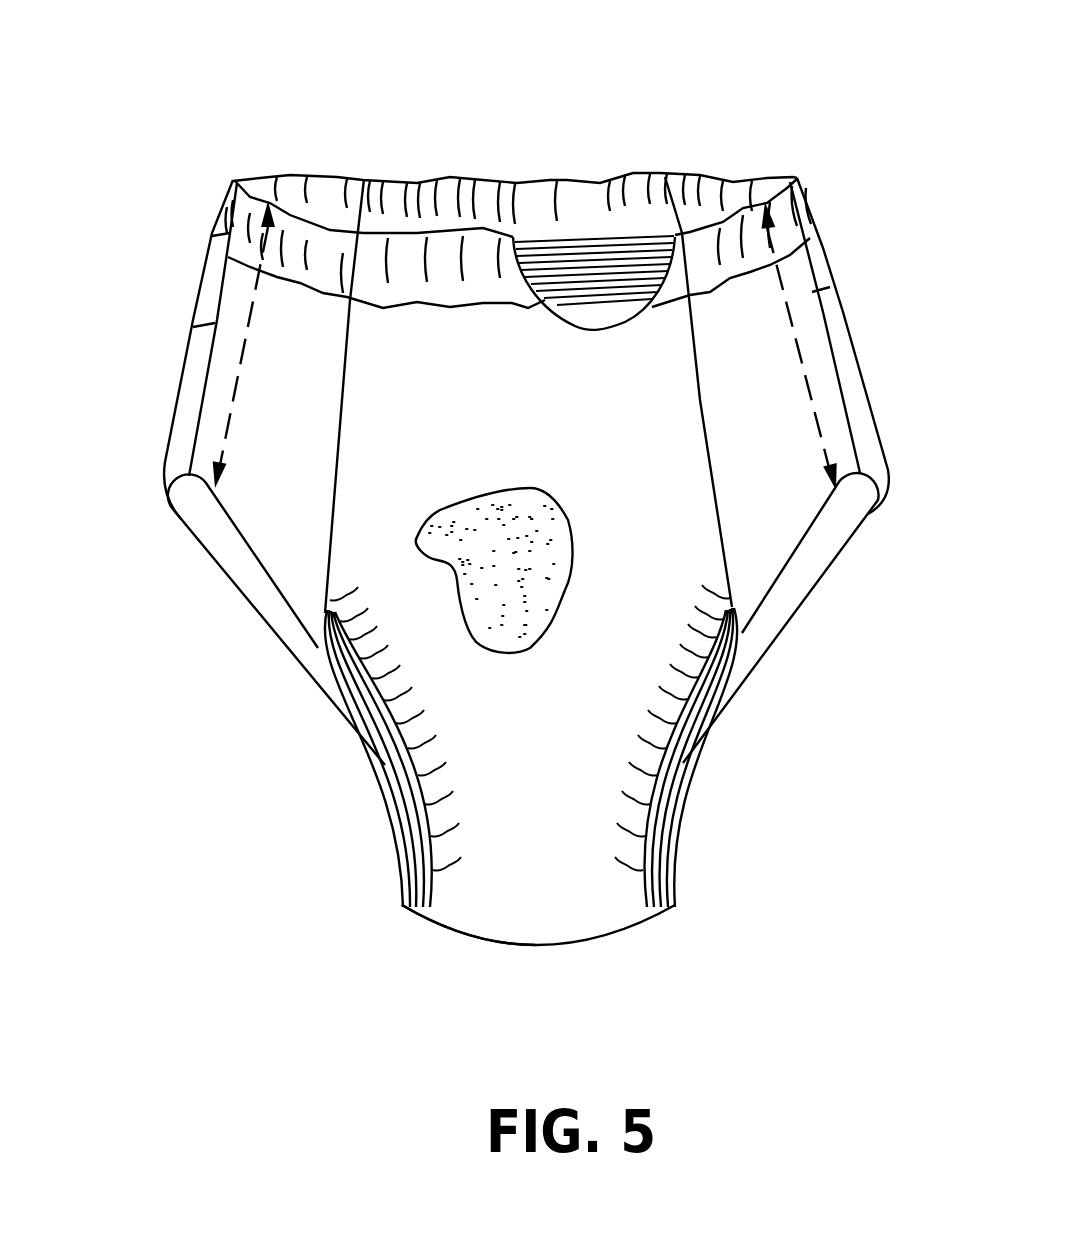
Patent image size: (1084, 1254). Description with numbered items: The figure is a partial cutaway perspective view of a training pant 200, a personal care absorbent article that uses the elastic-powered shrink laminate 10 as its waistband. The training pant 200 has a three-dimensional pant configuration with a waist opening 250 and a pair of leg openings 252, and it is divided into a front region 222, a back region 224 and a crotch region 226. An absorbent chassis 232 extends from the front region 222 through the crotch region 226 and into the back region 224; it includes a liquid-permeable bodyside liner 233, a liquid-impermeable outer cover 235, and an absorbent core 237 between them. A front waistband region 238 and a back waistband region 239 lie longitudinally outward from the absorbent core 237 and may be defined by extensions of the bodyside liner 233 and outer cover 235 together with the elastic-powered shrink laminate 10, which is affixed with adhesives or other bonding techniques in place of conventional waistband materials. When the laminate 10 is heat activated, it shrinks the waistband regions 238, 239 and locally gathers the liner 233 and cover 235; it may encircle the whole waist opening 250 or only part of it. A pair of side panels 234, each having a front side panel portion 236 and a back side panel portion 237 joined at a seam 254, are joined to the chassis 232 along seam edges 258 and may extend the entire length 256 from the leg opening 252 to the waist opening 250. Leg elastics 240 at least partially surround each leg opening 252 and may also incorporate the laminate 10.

The elastic-powered shrink laminate 10 is at (588, 262).
The training pant 200 is at (650, 140).
The front region 222 is at (580, 768).
The back region 224 is at (505, 182).
The crotch region 226 is at (468, 941).
The absorbent chassis 232 is at (687, 508).
The bodyside liner 233 is at (457, 183).
The side panels 234 is at (192, 388).
The outer cover 235 is at (557, 910).
The front side panel portion 236 is at (203, 443).
The absorbent core 237 is at (213, 280).
The front waistband region 238 is at (410, 182).
The back waistband region 239 is at (577, 180).
The leg elastics 240 is at (400, 798).
The waist opening 250 is at (698, 205).
The leg openings 252 is at (752, 643).
The seam 254 is at (215, 325).
The length 256 is at (245, 368).
The seam edges 258 is at (345, 412).